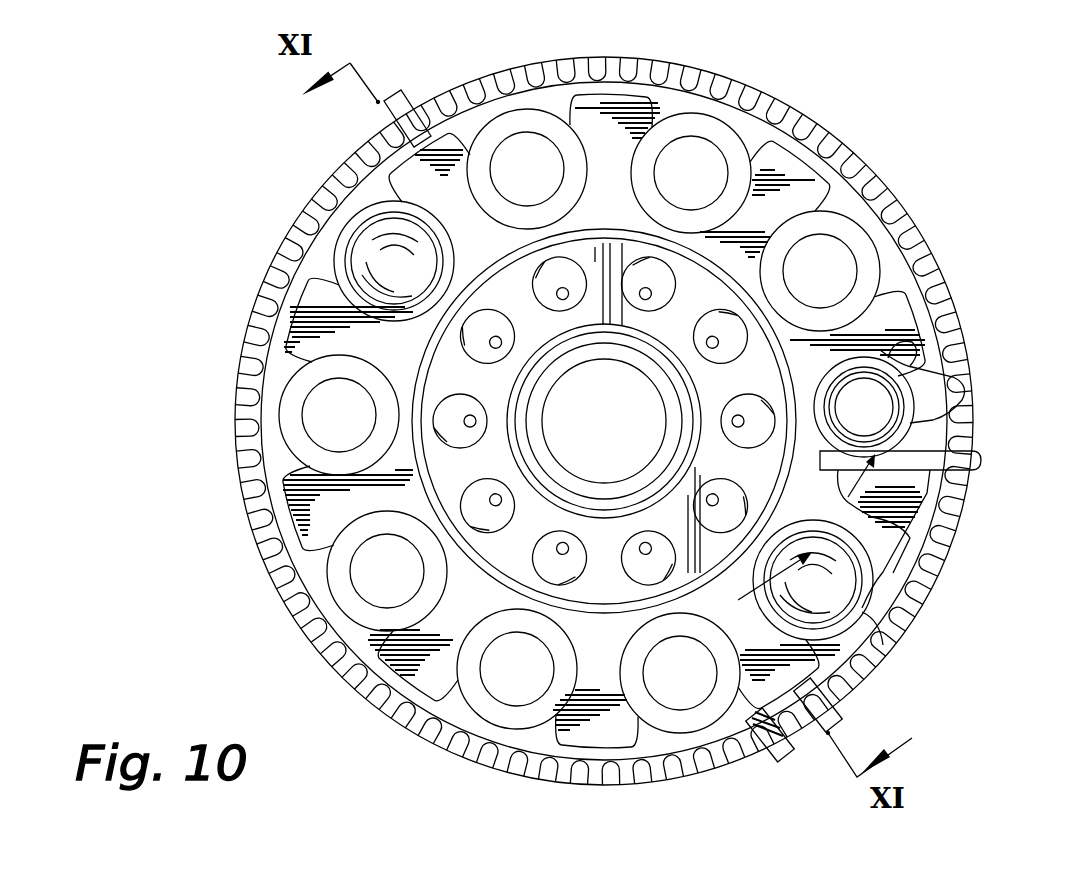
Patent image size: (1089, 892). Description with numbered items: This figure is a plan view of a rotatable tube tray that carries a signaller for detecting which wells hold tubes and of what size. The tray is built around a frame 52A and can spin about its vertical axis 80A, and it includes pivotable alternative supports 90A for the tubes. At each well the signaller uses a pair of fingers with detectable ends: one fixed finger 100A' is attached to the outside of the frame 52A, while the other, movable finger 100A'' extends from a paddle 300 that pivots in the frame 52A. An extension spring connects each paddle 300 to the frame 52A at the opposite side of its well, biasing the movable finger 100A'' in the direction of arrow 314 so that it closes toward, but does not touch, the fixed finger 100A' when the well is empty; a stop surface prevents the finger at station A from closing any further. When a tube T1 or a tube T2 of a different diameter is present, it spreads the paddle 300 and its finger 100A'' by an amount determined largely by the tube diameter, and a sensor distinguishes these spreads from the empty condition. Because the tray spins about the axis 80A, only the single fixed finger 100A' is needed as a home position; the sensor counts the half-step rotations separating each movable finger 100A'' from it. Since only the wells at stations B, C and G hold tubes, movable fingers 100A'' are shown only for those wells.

The frame 52A is at (860, 684).
The vertical axis 80A is at (628, 450).
The tube T1 is at (937, 597).
The tube T2 is at (880, 380).
The pivotable alternative support 90A is at (945, 393).
The fixed finger 100A' is at (908, 646).
The movable finger 100A'' is at (442, 90).
The paddle 300 is at (895, 528).
The arrow 314 is at (880, 641).
The station G is at (268, 126).
The station A is at (699, 803).
The station B is at (947, 635).
The station C is at (1030, 397).